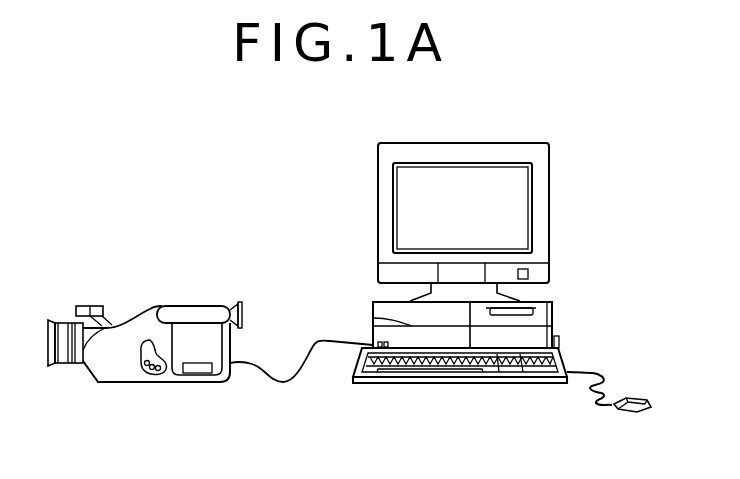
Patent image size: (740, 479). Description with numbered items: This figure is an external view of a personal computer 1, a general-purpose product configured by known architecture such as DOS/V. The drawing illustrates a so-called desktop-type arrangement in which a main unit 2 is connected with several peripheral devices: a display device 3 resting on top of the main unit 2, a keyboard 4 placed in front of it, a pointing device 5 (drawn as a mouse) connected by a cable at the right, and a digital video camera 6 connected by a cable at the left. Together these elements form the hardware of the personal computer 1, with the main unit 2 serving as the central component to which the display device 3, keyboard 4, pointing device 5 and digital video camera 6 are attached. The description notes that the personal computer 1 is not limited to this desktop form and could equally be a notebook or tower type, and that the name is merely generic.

The personal computer 1 is at (489, 123).
The main unit 2 is at (555, 319).
The display device 3 is at (378, 211).
The keyboard 4 is at (457, 383).
The pointing device 5 is at (637, 397).
The digital video camera 6 is at (153, 383).